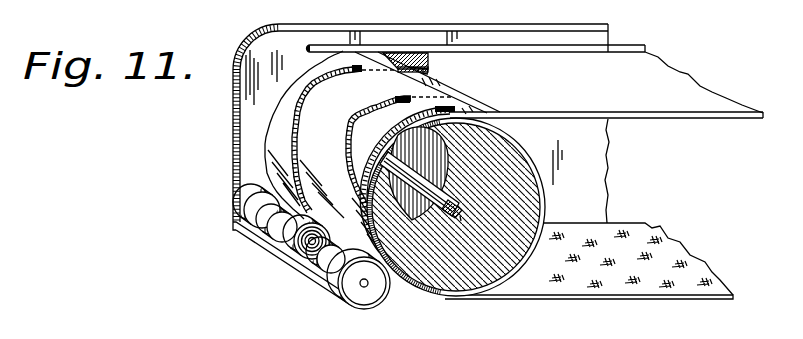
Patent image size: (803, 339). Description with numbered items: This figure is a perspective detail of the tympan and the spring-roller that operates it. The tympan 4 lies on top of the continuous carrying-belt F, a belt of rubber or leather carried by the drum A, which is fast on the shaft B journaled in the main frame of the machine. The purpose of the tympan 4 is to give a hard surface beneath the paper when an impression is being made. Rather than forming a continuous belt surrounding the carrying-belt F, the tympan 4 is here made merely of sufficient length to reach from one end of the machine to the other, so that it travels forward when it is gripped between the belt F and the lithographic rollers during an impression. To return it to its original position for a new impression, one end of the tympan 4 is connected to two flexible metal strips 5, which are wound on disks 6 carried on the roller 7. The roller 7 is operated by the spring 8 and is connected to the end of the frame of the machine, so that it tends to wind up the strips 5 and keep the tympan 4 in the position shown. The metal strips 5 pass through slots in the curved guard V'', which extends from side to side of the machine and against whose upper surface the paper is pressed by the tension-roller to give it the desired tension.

The tympan 4 is at (535, 134).
The flexible metal strips 5 is at (346, 135).
The disks 6 is at (256, 243).
The roller 7 is at (362, 284).
The spring 8 is at (287, 257).
The drum A is at (543, 199).
The shaft B is at (448, 201).
The carrying-belt F is at (684, 121).
The curved guard V'' is at (272, 135).